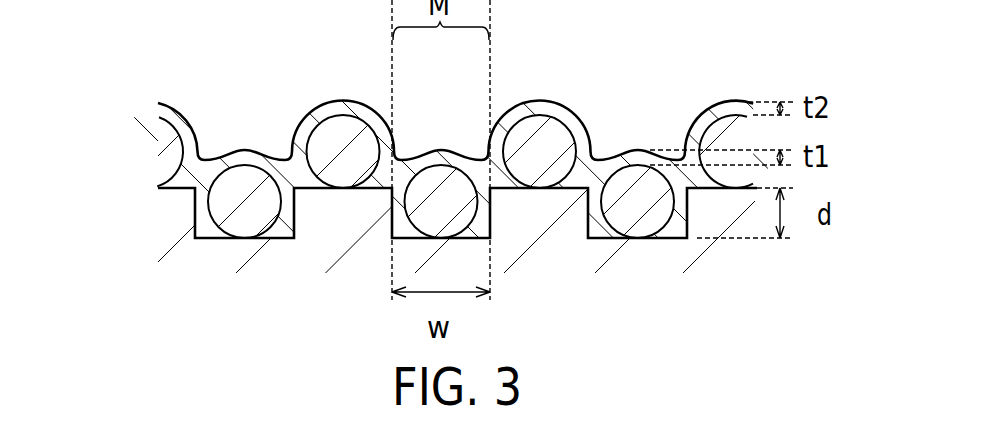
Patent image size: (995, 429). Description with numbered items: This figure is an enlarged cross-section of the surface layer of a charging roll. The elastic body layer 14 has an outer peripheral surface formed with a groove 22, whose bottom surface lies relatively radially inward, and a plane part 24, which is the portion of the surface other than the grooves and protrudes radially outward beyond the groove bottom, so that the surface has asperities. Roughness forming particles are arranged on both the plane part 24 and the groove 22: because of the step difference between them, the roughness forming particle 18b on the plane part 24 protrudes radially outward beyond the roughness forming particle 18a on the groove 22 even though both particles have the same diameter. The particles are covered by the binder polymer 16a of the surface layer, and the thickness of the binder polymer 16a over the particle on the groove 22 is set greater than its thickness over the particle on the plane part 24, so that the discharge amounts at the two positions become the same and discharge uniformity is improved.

The elastic body layer 14 is at (193, 256).
The binder polymer 16a is at (184, 159).
The roughness forming particle on the groove 18a is at (222, 206).
The roughness forming particle on the plane part 18b is at (328, 146).
The groove 22 is at (471, 238).
The plane part 24 is at (305, 180).